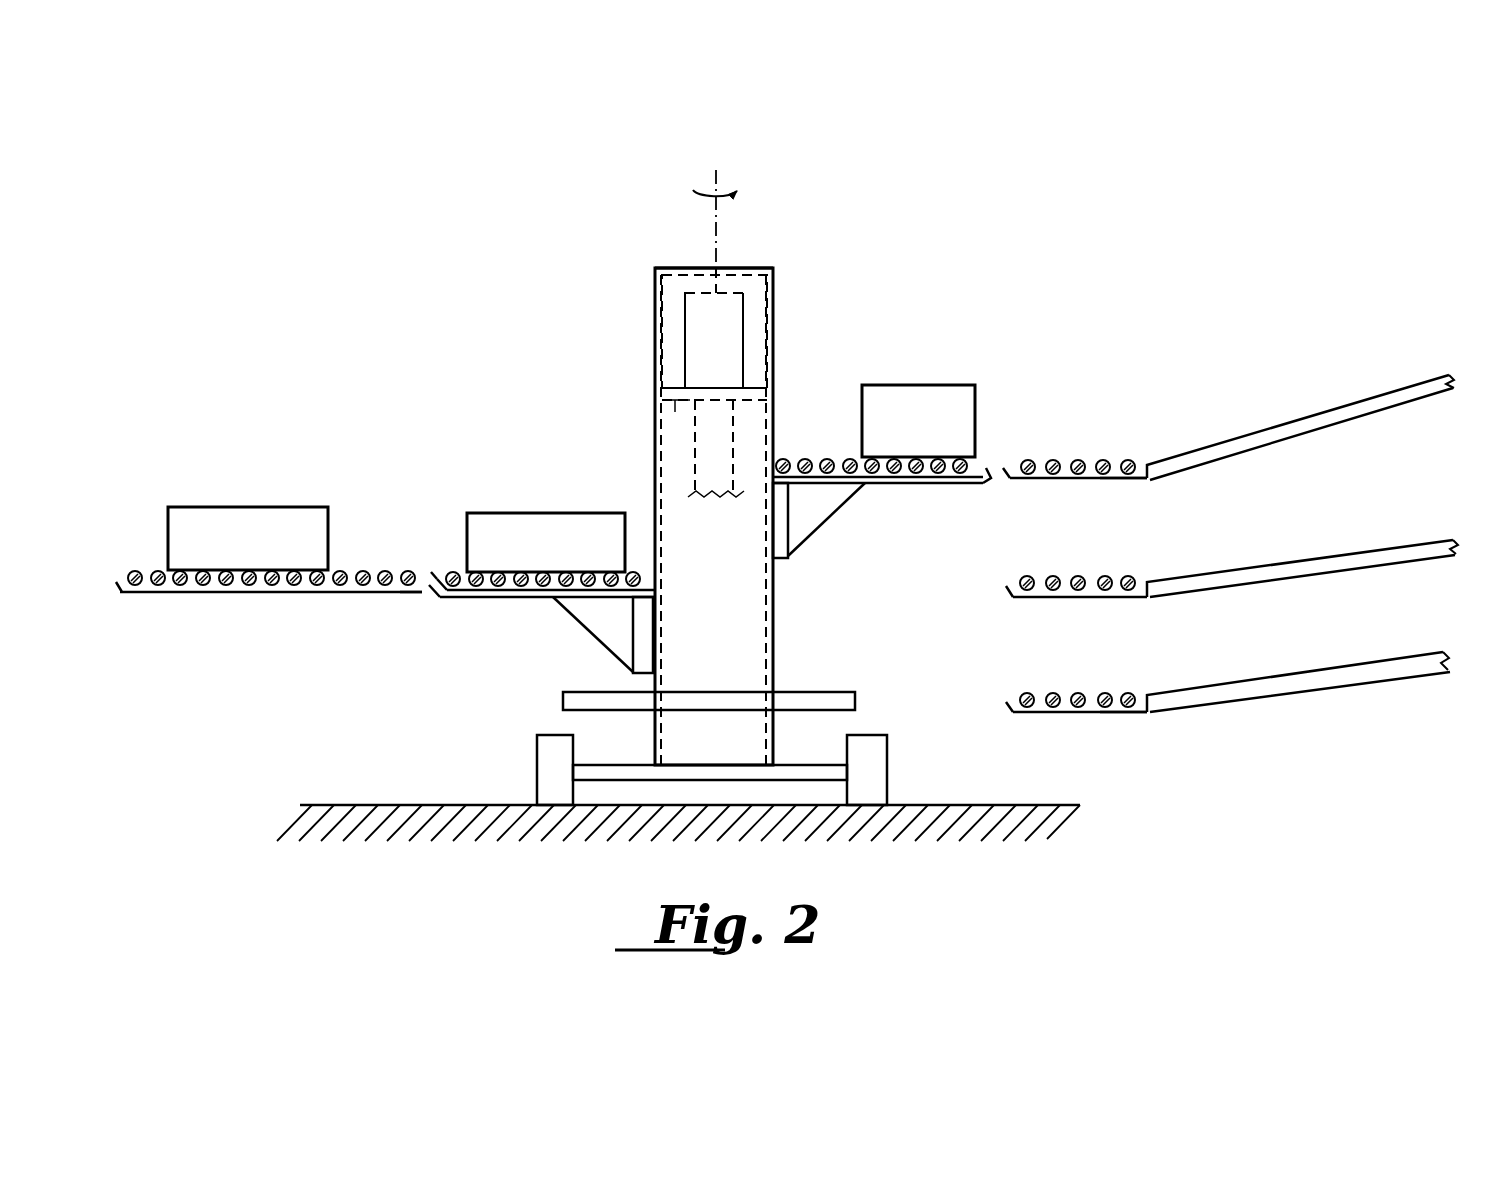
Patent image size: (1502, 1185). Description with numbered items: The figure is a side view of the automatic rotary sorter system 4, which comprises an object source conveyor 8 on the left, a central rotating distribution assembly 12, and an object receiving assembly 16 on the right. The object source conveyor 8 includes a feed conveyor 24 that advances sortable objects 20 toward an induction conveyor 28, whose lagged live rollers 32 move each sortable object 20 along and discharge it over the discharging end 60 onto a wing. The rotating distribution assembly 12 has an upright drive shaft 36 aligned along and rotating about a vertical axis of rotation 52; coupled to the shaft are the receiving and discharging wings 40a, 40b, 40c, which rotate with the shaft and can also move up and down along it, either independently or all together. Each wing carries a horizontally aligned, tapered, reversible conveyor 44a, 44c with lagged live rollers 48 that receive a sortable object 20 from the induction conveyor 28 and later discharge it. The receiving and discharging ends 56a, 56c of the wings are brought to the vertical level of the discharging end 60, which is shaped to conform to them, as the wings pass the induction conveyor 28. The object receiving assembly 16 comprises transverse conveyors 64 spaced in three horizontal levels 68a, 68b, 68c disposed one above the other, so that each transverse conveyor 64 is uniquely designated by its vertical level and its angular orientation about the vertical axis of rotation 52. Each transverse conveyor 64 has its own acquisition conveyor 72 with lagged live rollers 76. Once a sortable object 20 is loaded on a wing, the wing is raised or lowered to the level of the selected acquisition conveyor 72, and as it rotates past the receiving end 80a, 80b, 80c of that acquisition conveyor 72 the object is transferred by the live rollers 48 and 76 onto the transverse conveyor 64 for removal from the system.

The automatic rotary sorter system 4 is at (1080, 266).
The object source conveyor 8 is at (306, 472).
The rotating distribution assembly 12 is at (789, 346).
The object receiving assembly 16 is at (1312, 384).
The sortable object 20 is at (228, 512).
The feed conveyor 24 is at (250, 593).
The induction conveyor 28 is at (350, 593).
The lagged live rollers 32 is at (360, 571).
The upright drive shaft 36 is at (655, 456).
The receiving and discharging wing 40a is at (526, 583).
The receiving and discharging wing 40b is at (652, 392).
The receiving and discharging wing 40c is at (882, 473).
The reversible conveyor 44a is at (505, 598).
The reversible conveyor 44c is at (797, 452).
The lagged live rollers 48 is at (470, 592).
The vertical axis of rotation 52 is at (716, 235).
The receiving and discharging end 56a is at (434, 577).
The receiving and discharging end 56c is at (652, 402).
The discharging end 60 is at (423, 596).
The transverse conveyor 64 is at (1295, 440).
The horizontal level 68a is at (1409, 658).
The horizontal level 68b is at (1411, 540).
The horizontal level 68c is at (1394, 383).
The acquisition conveyor 72 is at (1110, 487).
The lagged live rollers 76 is at (1104, 460).
The receiving end 80a is at (1010, 712).
The receiving end 80b is at (1008, 594).
The receiving end 80c is at (1006, 488).